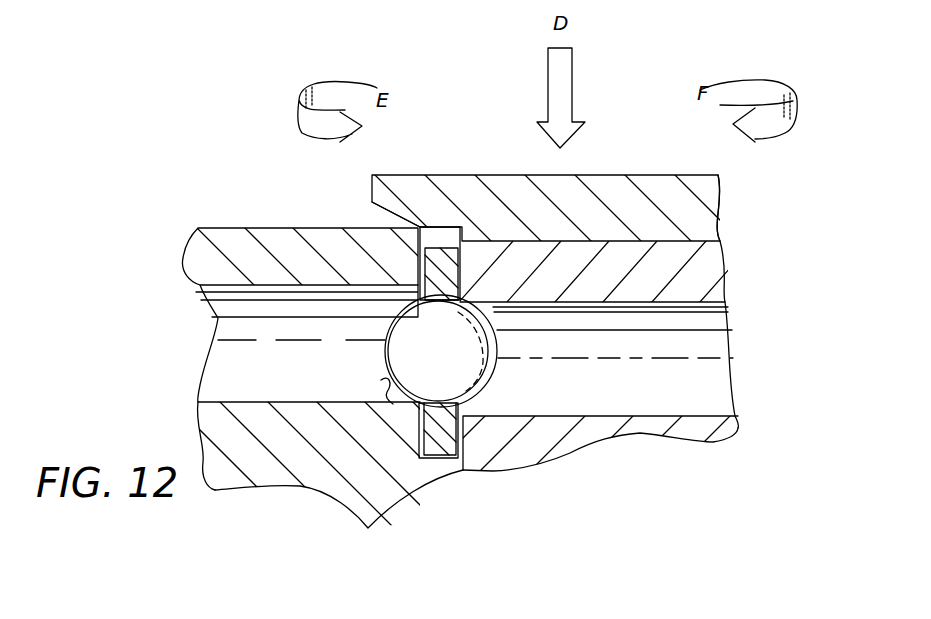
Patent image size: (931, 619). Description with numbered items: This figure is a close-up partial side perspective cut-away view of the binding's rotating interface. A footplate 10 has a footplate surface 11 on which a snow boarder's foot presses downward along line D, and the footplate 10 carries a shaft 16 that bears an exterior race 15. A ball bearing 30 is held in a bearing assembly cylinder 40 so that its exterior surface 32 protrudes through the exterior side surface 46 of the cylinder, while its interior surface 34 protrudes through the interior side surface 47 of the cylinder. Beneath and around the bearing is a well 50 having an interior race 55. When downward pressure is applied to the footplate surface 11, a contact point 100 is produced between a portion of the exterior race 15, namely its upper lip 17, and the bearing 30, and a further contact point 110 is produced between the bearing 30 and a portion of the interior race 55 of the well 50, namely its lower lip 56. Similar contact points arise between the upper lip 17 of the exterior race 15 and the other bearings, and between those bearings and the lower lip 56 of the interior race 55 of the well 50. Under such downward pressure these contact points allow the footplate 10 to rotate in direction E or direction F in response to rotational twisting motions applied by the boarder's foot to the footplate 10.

The footplate 10 is at (392, 175).
The footplate surface 11 is at (660, 175).
The exterior race 15 is at (683, 350).
The shaft 16 is at (613, 260).
The upper lip 17 is at (495, 320).
The ball bearing 30 is at (445, 362).
The exterior surface 32 is at (383, 343).
The interior surface 34 is at (490, 378).
The bearing assembly cylinder 40 is at (432, 227).
The exterior side surface 46 is at (418, 403).
The interior side surface 47 is at (466, 401).
The well 50 is at (240, 245).
The interior race 55 is at (218, 320).
The lower lip 56 is at (403, 407).
The contact point 100 is at (466, 296).
The contact point 110 is at (383, 403).